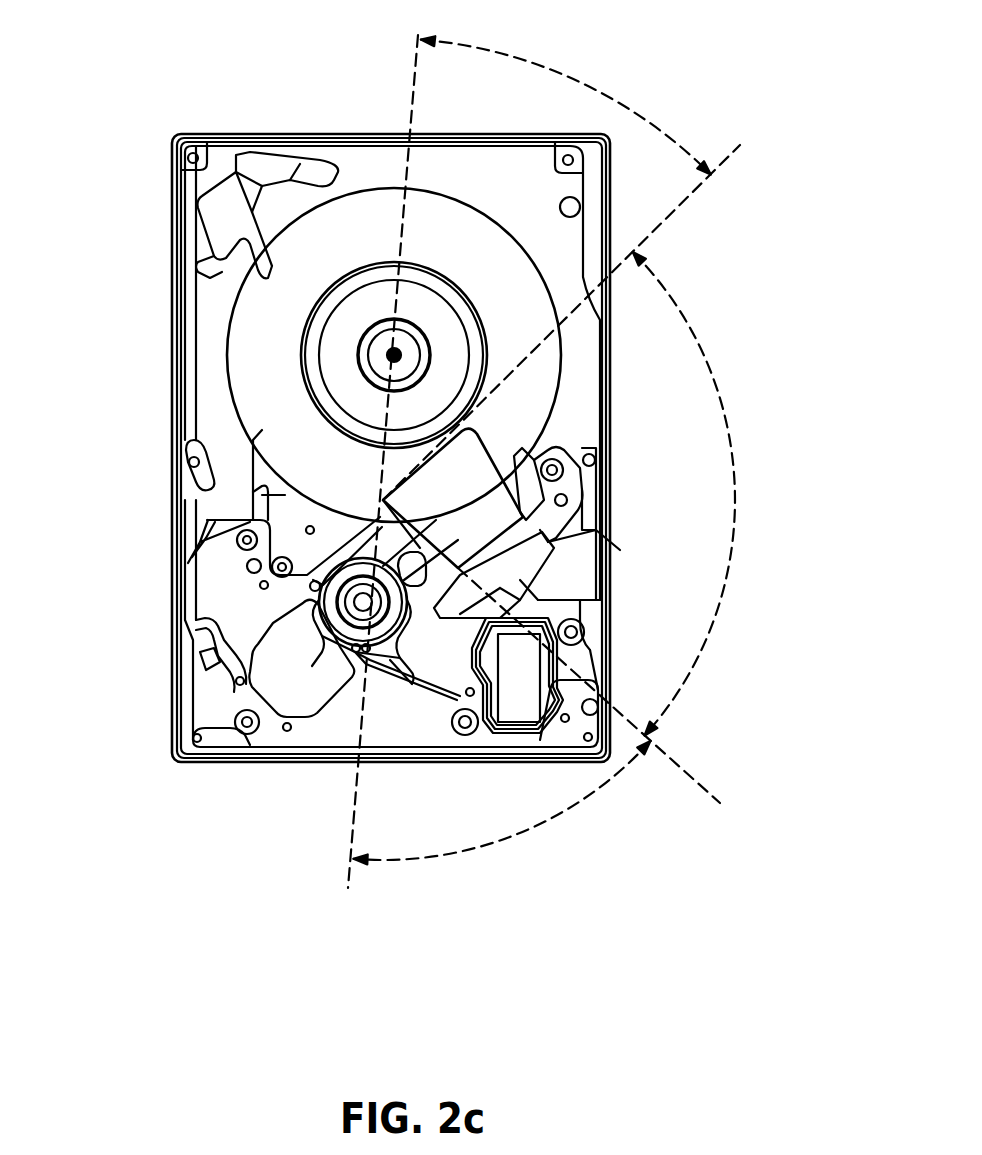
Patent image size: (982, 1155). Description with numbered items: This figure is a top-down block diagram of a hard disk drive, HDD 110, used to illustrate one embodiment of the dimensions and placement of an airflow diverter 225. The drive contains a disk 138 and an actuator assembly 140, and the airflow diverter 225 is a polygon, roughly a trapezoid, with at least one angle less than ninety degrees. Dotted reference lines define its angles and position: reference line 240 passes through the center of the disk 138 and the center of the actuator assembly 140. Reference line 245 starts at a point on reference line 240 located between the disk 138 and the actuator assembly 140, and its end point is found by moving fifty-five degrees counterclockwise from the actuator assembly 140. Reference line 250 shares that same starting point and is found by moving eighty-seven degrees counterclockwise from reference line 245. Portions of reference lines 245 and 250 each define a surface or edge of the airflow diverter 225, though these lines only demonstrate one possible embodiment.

The HDD 110 is at (178, 713).
The disk 138 is at (262, 328).
The actuator assembly 140 is at (390, 557).
The airflow diverter 225 is at (428, 508).
The reference line 240 is at (485, 480).
The reference line 245 is at (627, 537).
The reference line 250 is at (581, 268).